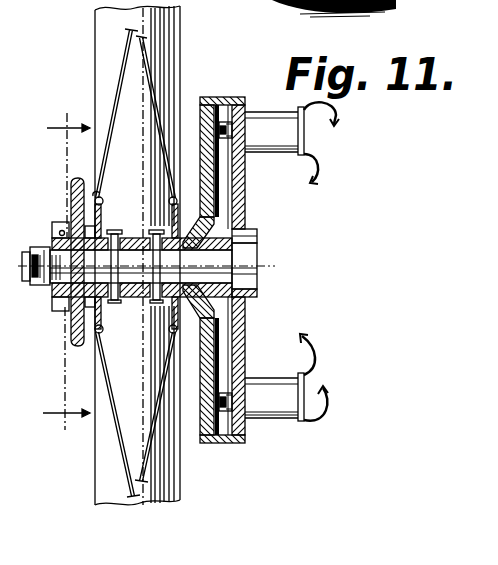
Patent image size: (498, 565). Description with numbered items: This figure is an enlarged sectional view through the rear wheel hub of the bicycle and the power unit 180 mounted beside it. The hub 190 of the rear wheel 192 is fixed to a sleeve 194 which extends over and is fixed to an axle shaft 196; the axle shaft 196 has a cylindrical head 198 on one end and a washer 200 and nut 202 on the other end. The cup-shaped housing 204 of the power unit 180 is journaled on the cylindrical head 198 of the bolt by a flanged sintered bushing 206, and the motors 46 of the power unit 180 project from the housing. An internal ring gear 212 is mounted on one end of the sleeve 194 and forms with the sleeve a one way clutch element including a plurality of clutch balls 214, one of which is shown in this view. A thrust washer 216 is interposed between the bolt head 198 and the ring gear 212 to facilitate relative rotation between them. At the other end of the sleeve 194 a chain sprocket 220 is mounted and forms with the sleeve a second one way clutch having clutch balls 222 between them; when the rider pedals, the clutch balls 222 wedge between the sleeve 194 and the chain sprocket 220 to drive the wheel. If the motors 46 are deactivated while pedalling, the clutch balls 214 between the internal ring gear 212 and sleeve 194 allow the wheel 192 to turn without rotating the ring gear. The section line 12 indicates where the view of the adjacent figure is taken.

The section line 12– 12 is at (66, 274).
The motors 46 is at (287, 135).
The power unit 180 is at (255, 426).
The hub 190 is at (130, 300).
The rear wheel 192 is at (107, 497).
The sleeve 194 is at (147, 232).
The axle shaft 196 is at (128, 233).
The cylindrical head 198 is at (257, 262).
The washer 200 is at (54, 240).
The nut 202 is at (33, 293).
The cup-shaped housing 204 is at (247, 188).
The flanged sintered bushing 206 is at (253, 235).
The internal ring gear 212 is at (217, 378).
The clutch balls 214 is at (146, 266).
The thrust washer 216 is at (252, 220).
The chain sprocket 220 is at (95, 195).
The clutch balls 222 is at (64, 236).